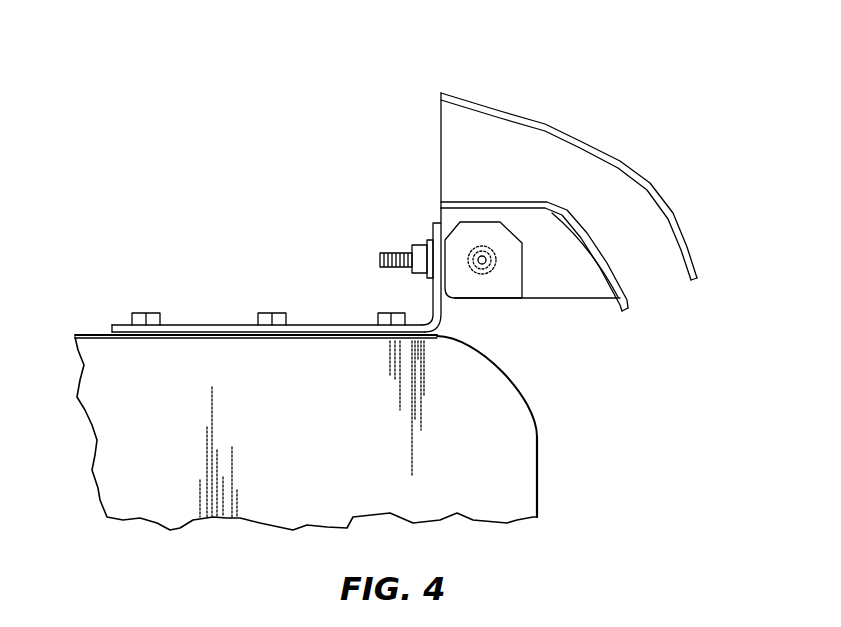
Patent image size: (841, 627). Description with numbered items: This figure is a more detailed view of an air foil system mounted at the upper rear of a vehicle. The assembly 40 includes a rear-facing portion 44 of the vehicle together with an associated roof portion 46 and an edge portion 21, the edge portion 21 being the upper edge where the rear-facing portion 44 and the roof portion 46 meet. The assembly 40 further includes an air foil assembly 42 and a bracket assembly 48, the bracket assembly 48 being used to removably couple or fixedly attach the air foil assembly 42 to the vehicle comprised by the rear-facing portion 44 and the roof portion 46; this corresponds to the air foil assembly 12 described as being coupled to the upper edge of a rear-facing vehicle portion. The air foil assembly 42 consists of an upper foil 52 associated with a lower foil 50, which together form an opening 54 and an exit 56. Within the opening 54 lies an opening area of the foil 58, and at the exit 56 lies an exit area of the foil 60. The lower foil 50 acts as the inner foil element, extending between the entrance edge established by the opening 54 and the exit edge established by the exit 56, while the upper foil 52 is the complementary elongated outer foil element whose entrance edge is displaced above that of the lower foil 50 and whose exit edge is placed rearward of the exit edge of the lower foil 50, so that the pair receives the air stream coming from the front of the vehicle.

The air foil assembly 12 is at (95, 456).
The upper edge 21 is at (527, 402).
The assembly 40 is at (229, 264).
The air foil assembly 42 is at (518, 100).
The rear-facing portion 44 is at (512, 458).
The roof portion 46 is at (95, 333).
The bracket assembly 48 is at (322, 300).
The lower foil 50 is at (445, 200).
The upper foil 52 is at (545, 118).
The opening 54 is at (438, 112).
The exit 56 is at (668, 312).
The opening area of the foil 58 is at (500, 162).
The exit area of the foil 60 is at (665, 244).